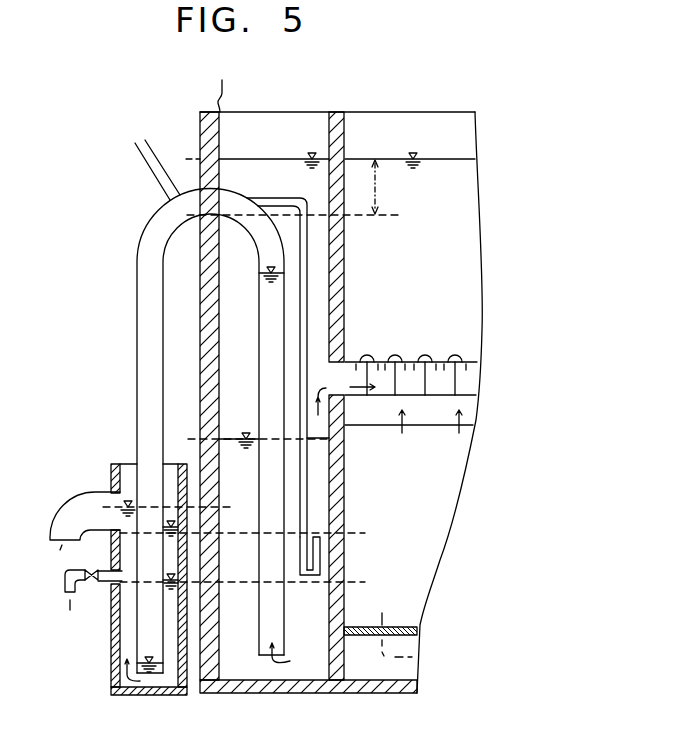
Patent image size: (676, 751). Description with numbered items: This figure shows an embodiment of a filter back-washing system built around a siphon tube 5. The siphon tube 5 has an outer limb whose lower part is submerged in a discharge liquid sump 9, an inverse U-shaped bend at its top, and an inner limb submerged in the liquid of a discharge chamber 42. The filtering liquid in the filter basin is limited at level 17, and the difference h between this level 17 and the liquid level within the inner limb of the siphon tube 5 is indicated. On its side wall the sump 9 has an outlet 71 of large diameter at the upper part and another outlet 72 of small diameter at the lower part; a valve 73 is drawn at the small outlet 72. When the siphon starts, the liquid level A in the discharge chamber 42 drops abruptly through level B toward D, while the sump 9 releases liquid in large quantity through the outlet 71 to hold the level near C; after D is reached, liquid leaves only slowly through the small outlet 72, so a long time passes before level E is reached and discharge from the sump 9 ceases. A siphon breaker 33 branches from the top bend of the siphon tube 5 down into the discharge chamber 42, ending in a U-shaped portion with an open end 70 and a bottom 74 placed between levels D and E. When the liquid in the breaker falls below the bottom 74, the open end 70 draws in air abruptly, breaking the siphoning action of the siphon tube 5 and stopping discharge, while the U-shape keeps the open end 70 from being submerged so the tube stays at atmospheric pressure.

The siphon tube 5 is at (163, 318).
The discharge liquid sump 9 is at (111, 667).
The filter basin liquid limiting level 17 is at (363, 158).
The siphon breaker 33 is at (308, 294).
The discharge chamber 42 is at (305, 668).
The open end 70 is at (317, 534).
The outlet 71 is at (72, 499).
The outlet 72 is at (121, 577).
The valve 73 is at (90, 574).
The bottom 74 is at (303, 577).